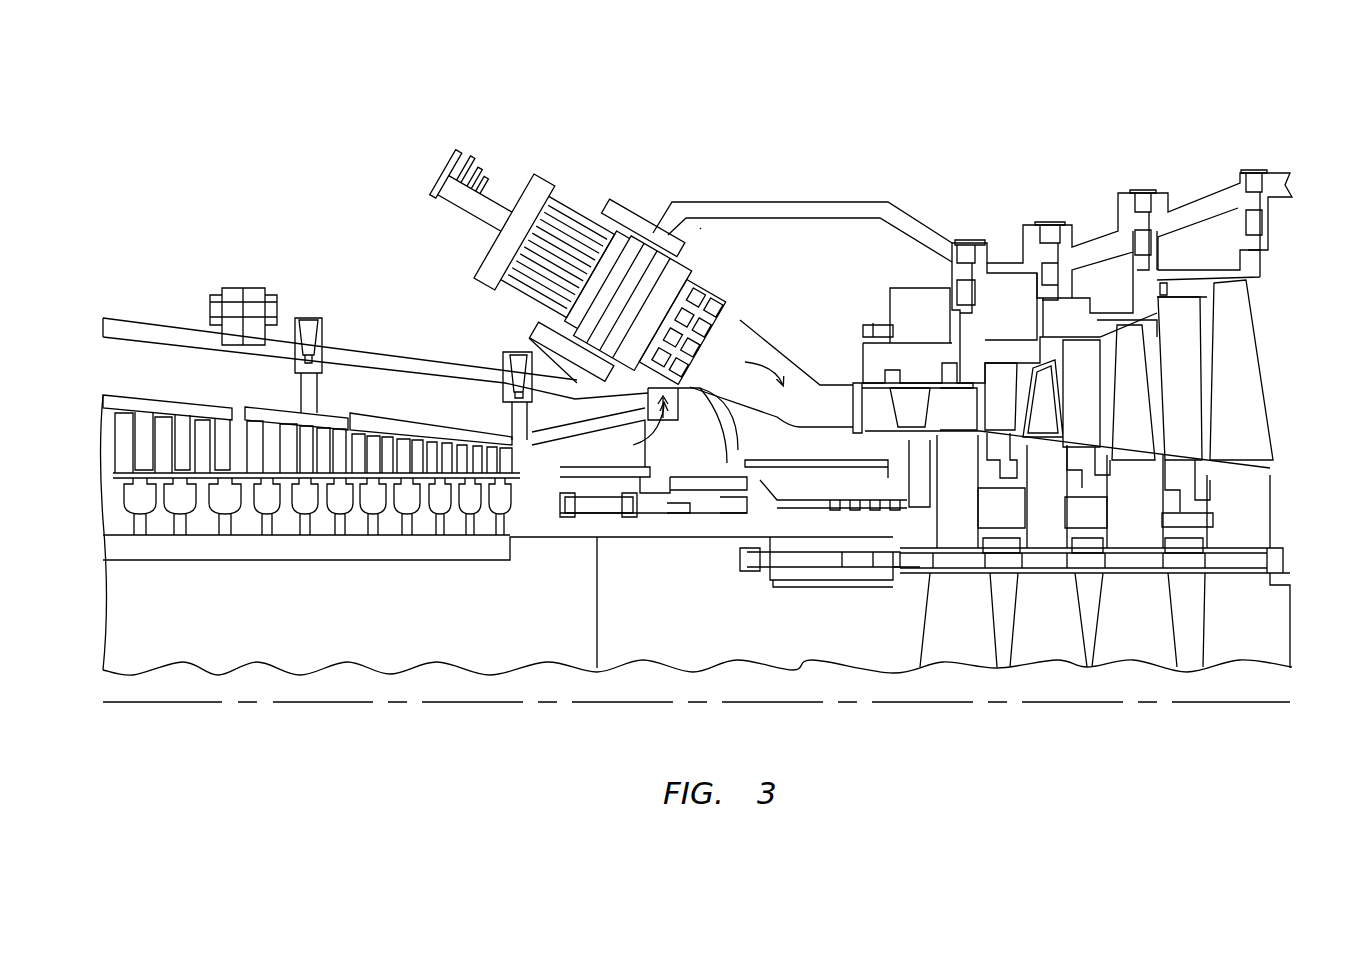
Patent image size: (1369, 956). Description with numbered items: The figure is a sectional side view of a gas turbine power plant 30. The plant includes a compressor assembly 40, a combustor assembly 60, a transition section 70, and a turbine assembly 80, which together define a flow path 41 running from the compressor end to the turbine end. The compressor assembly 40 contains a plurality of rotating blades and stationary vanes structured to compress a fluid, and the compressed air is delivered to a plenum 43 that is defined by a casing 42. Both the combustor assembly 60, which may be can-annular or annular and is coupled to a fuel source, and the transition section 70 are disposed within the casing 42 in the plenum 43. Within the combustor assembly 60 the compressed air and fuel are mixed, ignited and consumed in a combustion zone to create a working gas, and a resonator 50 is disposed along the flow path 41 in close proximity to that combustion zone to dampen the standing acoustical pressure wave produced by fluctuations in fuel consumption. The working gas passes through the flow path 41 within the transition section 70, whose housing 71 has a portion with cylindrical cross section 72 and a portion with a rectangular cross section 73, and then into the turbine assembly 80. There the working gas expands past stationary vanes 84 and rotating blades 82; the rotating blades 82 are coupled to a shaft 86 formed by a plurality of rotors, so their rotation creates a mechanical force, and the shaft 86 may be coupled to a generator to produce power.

The gas turbine power plant 30 is at (1010, 130).
The compressor assembly 40 is at (320, 205).
The flow path 41 is at (712, 437).
The casing 42 is at (840, 204).
The plenum 43 is at (846, 261).
The resonator 50 is at (720, 305).
The combustor assembly 60 is at (694, 268).
The transition section 70 is at (815, 352).
The housing 71 is at (825, 411).
The portion with cylindrical cross section 72 is at (775, 345).
The portion with rectangular cross section 73 is at (840, 425).
The turbine assembly 80 is at (1185, 180).
The rotating blades 82 is at (1255, 411).
The stationary vanes 84 is at (1195, 350).
The shaft 86 is at (1295, 615).